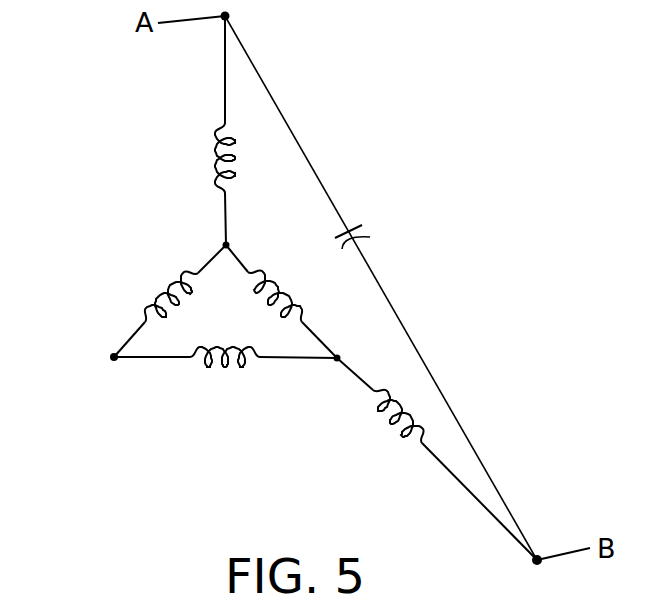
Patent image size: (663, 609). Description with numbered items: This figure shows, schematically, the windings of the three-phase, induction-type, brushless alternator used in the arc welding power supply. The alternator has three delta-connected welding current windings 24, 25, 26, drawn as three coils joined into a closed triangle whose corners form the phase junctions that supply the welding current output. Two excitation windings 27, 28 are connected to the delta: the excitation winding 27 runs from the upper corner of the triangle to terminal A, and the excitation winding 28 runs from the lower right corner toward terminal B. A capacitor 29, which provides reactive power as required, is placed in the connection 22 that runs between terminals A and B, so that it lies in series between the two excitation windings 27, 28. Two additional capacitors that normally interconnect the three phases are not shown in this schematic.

The line conductor between terminals A and B 22 is at (384, 180).
The delta-connected welding current winding 24 is at (160, 295).
The delta-connected welding current winding 25 is at (285, 293).
The delta-connected welding current winding 26 is at (223, 363).
The excitation winding 27 is at (215, 150).
The excitation winding 28 is at (380, 413).
The capacitor 29 is at (363, 230).